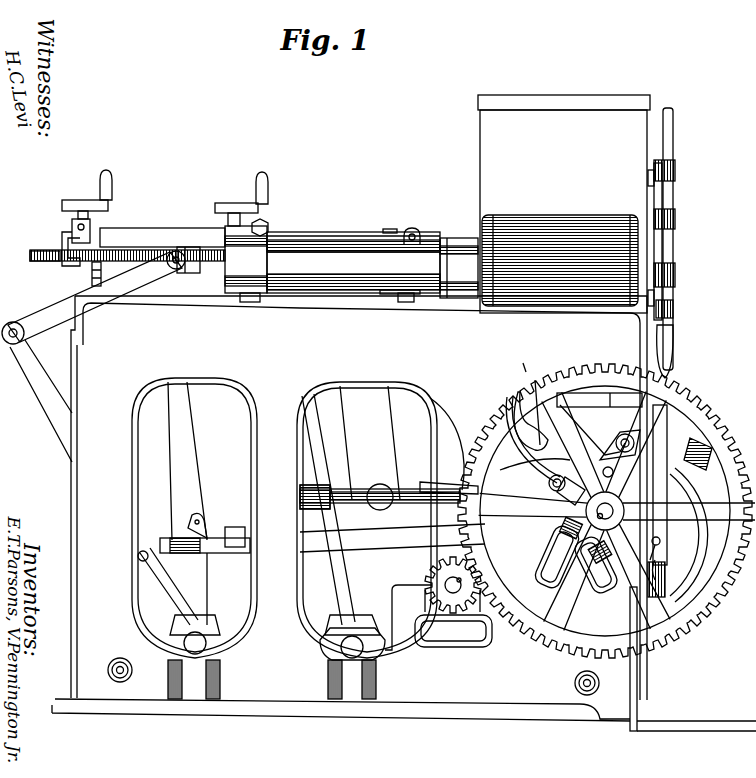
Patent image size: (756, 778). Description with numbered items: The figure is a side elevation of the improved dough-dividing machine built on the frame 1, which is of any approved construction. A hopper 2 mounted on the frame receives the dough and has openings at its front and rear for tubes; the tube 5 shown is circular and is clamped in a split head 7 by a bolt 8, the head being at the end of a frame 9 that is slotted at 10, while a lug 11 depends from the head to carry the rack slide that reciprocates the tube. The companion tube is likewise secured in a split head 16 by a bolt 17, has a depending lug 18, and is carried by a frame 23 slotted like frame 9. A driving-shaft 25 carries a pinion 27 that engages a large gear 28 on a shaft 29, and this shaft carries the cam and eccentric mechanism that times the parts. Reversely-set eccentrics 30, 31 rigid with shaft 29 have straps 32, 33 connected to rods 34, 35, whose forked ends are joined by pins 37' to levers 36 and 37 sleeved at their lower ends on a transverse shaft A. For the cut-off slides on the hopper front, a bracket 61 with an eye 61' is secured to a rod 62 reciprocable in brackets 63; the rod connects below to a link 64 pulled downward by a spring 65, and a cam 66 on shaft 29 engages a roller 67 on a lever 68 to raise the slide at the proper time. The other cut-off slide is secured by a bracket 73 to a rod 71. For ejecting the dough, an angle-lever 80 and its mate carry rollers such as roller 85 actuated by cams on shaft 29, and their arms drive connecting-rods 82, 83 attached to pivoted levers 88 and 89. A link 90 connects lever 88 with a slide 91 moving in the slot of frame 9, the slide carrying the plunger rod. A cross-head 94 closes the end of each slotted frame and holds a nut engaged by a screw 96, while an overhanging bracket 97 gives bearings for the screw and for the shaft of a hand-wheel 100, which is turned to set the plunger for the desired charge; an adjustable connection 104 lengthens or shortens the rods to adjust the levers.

The frame 1 is at (404, 513).
The hopper 2 is at (564, 204).
The tube 5 is at (372, 265).
The split head 7 is at (246, 259).
The bolt 8 is at (268, 226).
The frame 9 is at (167, 236).
The slot 10 is at (130, 250).
The lug 11 is at (250, 302).
The split head 16 is at (390, 229).
The bolt 17 is at (420, 234).
The lug 18 is at (405, 302).
The frame 23 is at (318, 232).
The driving-shaft 25 is at (455, 592).
The pinion 27 is at (446, 600).
The large gear 28 is at (547, 642).
The shaft 29 is at (612, 512).
The eccentric 30 is at (530, 460).
The eccentric 31 is at (671, 551).
The eccentric strap 32 is at (732, 590).
The eccentric strap 33 is at (752, 545).
The rod 34 is at (348, 489).
The rod 35 is at (455, 484).
The lever 36 is at (341, 514).
The lever 37 is at (382, 473).
The pin 37' is at (359, 443).
The bracket 61 is at (742, 251).
The eye 61' is at (686, 274).
The rod 62 is at (663, 196).
The bracket 63 is at (676, 169).
The link 64 is at (549, 483).
The spring 65 is at (666, 589).
The cam 66 is at (700, 482).
The roller 67 is at (706, 460).
The lever 68 is at (562, 490).
The rod 71 is at (674, 125).
The bracket 73 is at (676, 219).
The angle-lever 80 is at (519, 400).
The connecting-rod 82 is at (392, 540).
The connecting-rod 83 is at (243, 526).
The roller 85 is at (632, 440).
The pivoted lever 88 is at (179, 601).
The pivoted lever 89 is at (187, 461).
The link 90 is at (60, 310).
The slide 91 is at (192, 248).
The cross-head 94 is at (94, 278).
The screw 96 is at (36, 258).
The overhanging bracket 97 is at (62, 240).
The hand-wheel 100 is at (84, 200).
The adjustable connection 104 is at (208, 560).
The shaft A is at (342, 650).